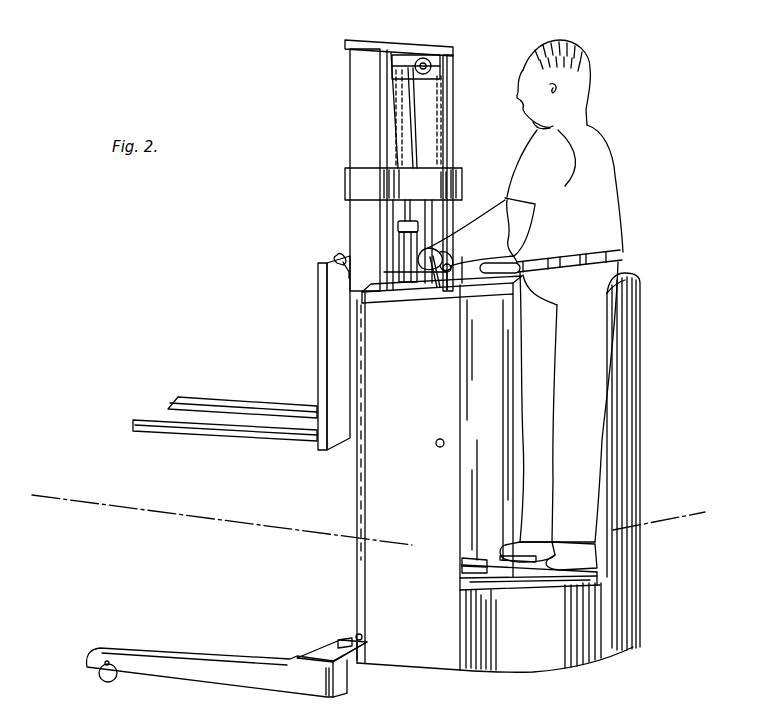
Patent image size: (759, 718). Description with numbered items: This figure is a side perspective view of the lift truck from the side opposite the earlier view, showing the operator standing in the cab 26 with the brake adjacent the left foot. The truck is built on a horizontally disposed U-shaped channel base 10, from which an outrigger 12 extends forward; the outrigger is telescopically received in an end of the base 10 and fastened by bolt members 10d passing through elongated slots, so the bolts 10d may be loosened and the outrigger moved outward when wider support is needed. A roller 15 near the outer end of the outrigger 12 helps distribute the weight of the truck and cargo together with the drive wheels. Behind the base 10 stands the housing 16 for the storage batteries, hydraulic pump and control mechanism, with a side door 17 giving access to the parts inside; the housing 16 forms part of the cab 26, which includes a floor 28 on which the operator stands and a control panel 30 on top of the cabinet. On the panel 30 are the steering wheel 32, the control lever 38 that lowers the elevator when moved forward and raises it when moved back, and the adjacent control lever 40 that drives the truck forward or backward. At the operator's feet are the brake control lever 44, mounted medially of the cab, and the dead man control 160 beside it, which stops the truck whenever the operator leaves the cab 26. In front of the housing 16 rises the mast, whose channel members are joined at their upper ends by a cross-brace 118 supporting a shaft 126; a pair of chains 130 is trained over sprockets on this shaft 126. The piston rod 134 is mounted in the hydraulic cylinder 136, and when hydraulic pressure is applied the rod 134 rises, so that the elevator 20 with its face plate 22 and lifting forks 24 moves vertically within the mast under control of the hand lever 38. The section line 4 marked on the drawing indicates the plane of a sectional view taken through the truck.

The U-shaped channel base 10 is at (340, 643).
The bolt members 10d is at (357, 636).
The outrigger 12 is at (176, 662).
The rollers 15 is at (104, 675).
The housing 16 is at (470, 460).
The side doors 17 is at (439, 473).
The elevator 20 is at (357, 121).
The face plate 22 is at (320, 320).
The lifting forks 24 is at (177, 402).
The operator's cab 26 is at (623, 470).
The floor 28 is at (518, 586).
The control panel 30 is at (420, 284).
The steering wheel 32 is at (493, 273).
The control lever 38 is at (457, 281).
The control lever 40 is at (427, 272).
The brake control lever 44 is at (517, 546).
The cross-brace 118 is at (453, 180).
The shaft 126 is at (418, 58).
The chains 130 is at (402, 138).
The piston rod 134 is at (400, 153).
The hydraulic cylinder 136 is at (400, 232).
The dead man control 160 is at (480, 560).
The section line 4 is at (49, 488).